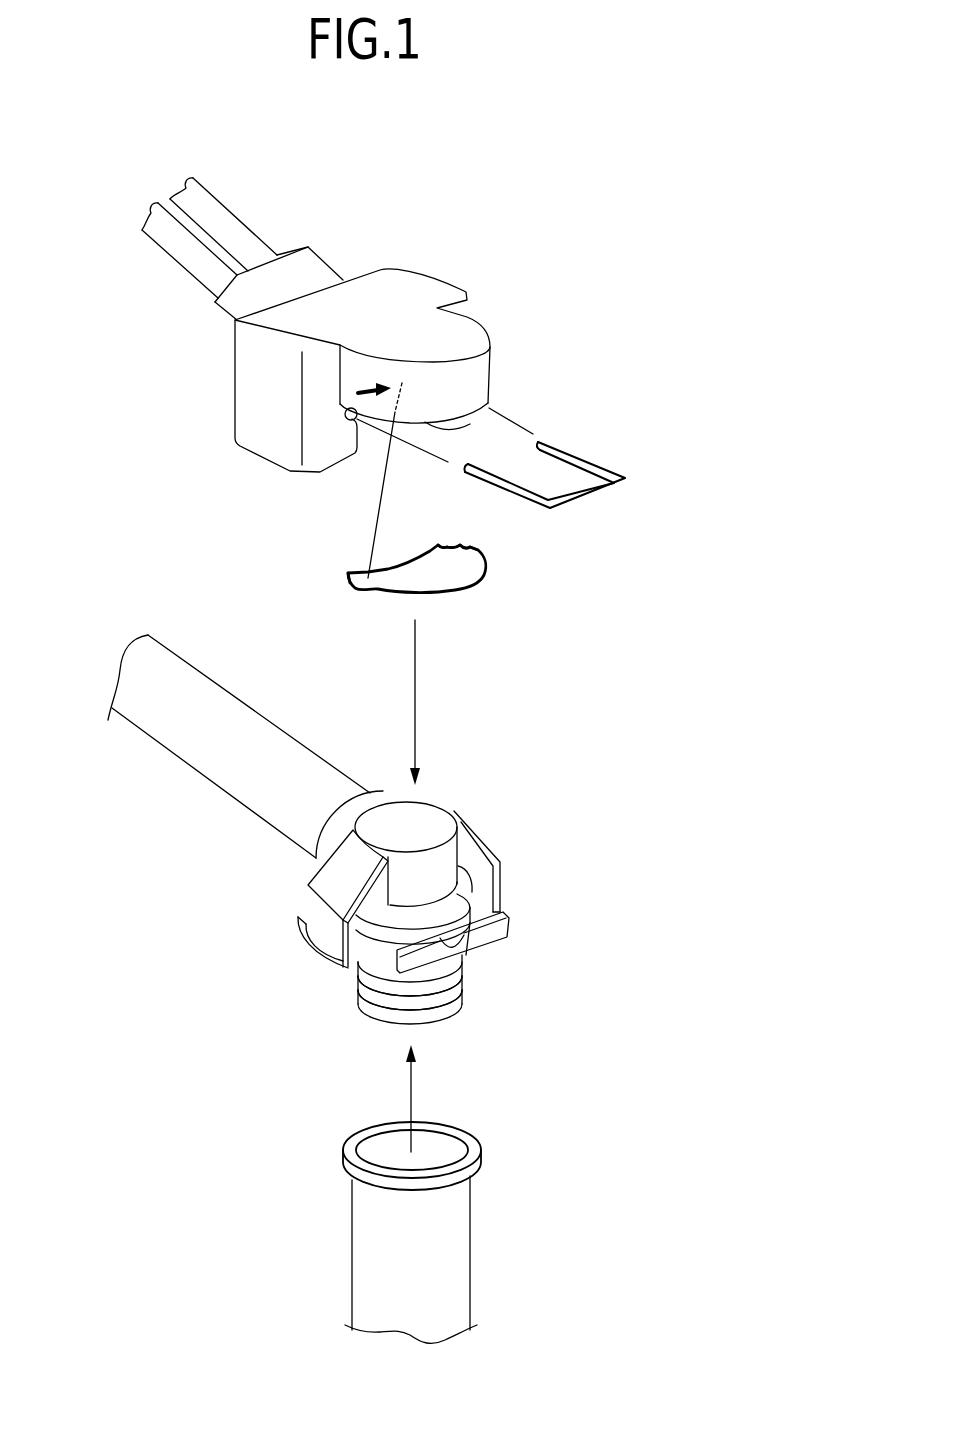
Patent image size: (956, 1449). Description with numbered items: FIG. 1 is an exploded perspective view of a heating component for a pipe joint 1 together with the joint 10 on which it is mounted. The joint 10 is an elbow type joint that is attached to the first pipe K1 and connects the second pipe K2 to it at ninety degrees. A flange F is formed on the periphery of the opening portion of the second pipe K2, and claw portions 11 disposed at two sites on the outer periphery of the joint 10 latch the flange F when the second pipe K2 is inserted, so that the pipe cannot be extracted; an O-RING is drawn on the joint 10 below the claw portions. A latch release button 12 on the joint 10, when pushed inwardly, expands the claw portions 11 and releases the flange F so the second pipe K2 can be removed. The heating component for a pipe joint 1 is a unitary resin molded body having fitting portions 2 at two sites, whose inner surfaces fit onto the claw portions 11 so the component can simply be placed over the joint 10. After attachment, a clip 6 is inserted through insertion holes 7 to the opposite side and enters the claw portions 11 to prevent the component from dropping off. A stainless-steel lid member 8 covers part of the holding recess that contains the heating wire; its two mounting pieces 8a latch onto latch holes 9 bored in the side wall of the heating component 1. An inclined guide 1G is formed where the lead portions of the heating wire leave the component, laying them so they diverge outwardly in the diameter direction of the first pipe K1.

The heating component for a pipe joint 1 is at (399, 275).
The inclined guide 1G is at (310, 267).
The fitting portions 2 is at (441, 279).
The clip 6 is at (607, 467).
The insertion holes 7 is at (350, 424).
The lid member 8 is at (483, 576).
The mounting pieces 8a is at (478, 550).
The latch holes 9 is at (358, 392).
The joint 10 is at (440, 818).
The claw portions 11 is at (500, 856).
The latch release button 12 is at (508, 935).
The O-ring O-RING is at (460, 967).
The first pipe K1 is at (230, 780).
The second pipe K2 is at (458, 1260).
The flange F is at (480, 1147).